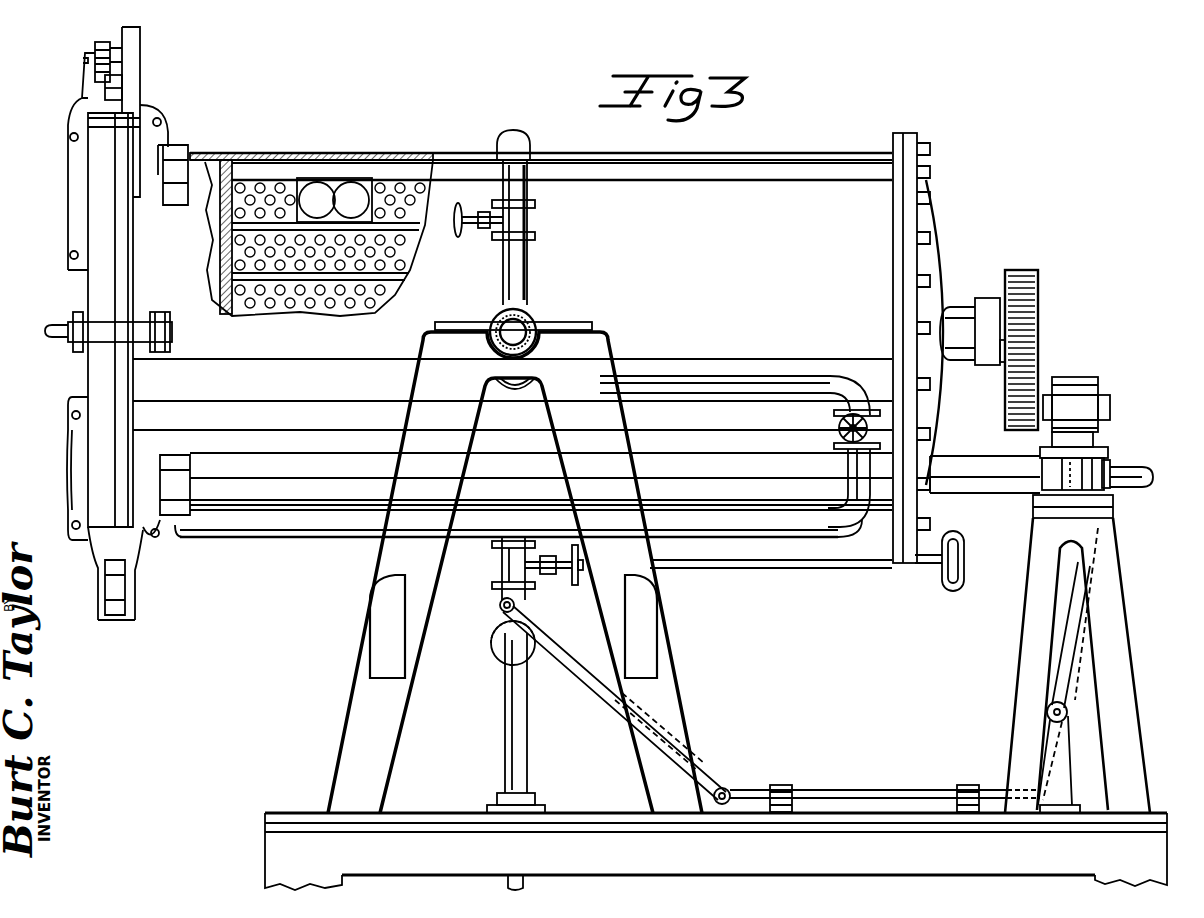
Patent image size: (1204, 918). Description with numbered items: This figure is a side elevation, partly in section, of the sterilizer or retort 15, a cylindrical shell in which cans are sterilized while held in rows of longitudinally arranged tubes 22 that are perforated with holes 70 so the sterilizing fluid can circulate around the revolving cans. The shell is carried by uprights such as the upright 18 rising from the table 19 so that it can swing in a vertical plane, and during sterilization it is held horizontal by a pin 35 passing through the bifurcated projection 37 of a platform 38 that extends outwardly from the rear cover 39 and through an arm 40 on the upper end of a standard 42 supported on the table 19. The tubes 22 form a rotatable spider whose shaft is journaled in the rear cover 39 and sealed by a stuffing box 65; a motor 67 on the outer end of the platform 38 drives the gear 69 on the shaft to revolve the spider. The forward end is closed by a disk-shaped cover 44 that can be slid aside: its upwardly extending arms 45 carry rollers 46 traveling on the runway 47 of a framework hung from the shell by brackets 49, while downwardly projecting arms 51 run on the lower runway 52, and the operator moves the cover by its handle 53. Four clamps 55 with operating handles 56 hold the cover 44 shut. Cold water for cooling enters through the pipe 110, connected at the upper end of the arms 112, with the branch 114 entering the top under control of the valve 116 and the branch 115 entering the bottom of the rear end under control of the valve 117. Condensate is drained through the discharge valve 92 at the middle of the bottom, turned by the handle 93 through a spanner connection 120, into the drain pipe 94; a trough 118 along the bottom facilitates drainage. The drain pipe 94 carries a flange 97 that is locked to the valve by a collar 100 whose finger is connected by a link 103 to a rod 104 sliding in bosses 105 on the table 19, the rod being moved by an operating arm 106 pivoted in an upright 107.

The sterilizer 15 is at (512, 360).
The upright 18 is at (600, 342).
The table 19 is at (858, 845).
The tubes 22 is at (333, 176).
The pin 35 is at (1128, 470).
The bifurcated projection 37 is at (1080, 458).
The platform 38 is at (1009, 404).
The rear cover 39 is at (935, 222).
The arm 40 is at (1075, 480).
The standard 42 is at (1115, 566).
The cover 44 is at (100, 229).
The upwardly extending arms 45 is at (80, 170).
The rollers 46 is at (112, 62).
The runway 47 is at (115, 90).
The brackets 49 is at (170, 140).
The downwardly projecting arms 51 is at (84, 466).
The lower runway 52 is at (118, 590).
The handle 53 is at (48, 330).
The clamps 55 is at (118, 327).
The operating handles 56 is at (74, 498).
The stuffing box 65 is at (962, 308).
The motor 67 is at (1076, 380).
The gear 69 is at (1022, 270).
The holes 70 is at (278, 187).
The discharge valve 92 is at (503, 566).
The handle 93 is at (953, 591).
The drain pipe 94 is at (507, 690).
The flange 97 is at (498, 626).
The collar 100 is at (494, 640).
The link 103 is at (588, 680).
The rod 104 is at (838, 790).
The bosses 105 is at (780, 785).
The operating arm 106 is at (1078, 602).
The upright 107 is at (1058, 736).
The cold water pipe 110 is at (528, 320).
The arms 112 is at (470, 360).
The branch 114 is at (528, 138).
The branch 115 is at (738, 378).
The valve 116 is at (462, 236).
The valve 117 is at (838, 428).
The trough 118 is at (300, 538).
The spanner connection 120 is at (576, 582).